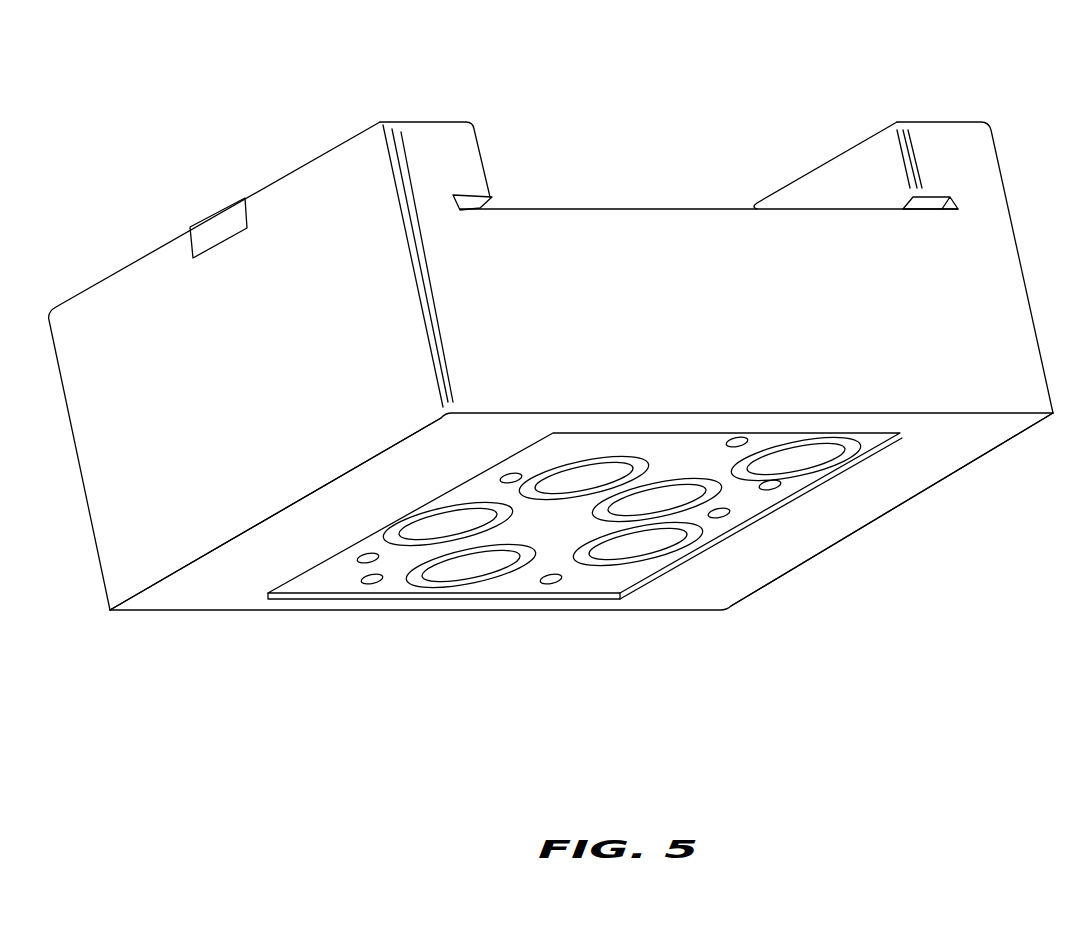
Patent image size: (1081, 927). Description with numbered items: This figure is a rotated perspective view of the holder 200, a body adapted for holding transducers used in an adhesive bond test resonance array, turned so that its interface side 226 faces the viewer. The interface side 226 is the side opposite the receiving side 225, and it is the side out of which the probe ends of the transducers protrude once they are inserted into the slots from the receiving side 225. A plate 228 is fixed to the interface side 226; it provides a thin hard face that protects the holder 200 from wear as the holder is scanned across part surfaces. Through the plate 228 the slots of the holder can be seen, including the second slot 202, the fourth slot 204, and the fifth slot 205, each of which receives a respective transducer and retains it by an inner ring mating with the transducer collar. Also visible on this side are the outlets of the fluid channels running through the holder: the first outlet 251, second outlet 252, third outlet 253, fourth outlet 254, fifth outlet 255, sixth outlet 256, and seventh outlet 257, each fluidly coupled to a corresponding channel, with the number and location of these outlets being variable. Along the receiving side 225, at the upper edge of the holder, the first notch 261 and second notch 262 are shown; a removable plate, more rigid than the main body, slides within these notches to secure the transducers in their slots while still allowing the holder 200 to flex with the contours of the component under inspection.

The holder 200 is at (259, 90).
The second slot 202 is at (457, 563).
The fourth slot 204 is at (802, 461).
The fifth slot 205 is at (581, 484).
The receiving side 225 is at (641, 157).
The interface side 226 is at (937, 526).
The plate 228 is at (205, 596).
The first outlet 251 is at (372, 585).
The second outlet 252 is at (368, 562).
The third outlet 253 is at (510, 472).
The fourth outlet 254 is at (737, 437).
The fifth outlet 255 is at (556, 586).
The sixth outlet 256 is at (728, 515).
The seventh outlet 257 is at (781, 487).
The first notch 261 is at (496, 203).
The second notch 262 is at (961, 203).